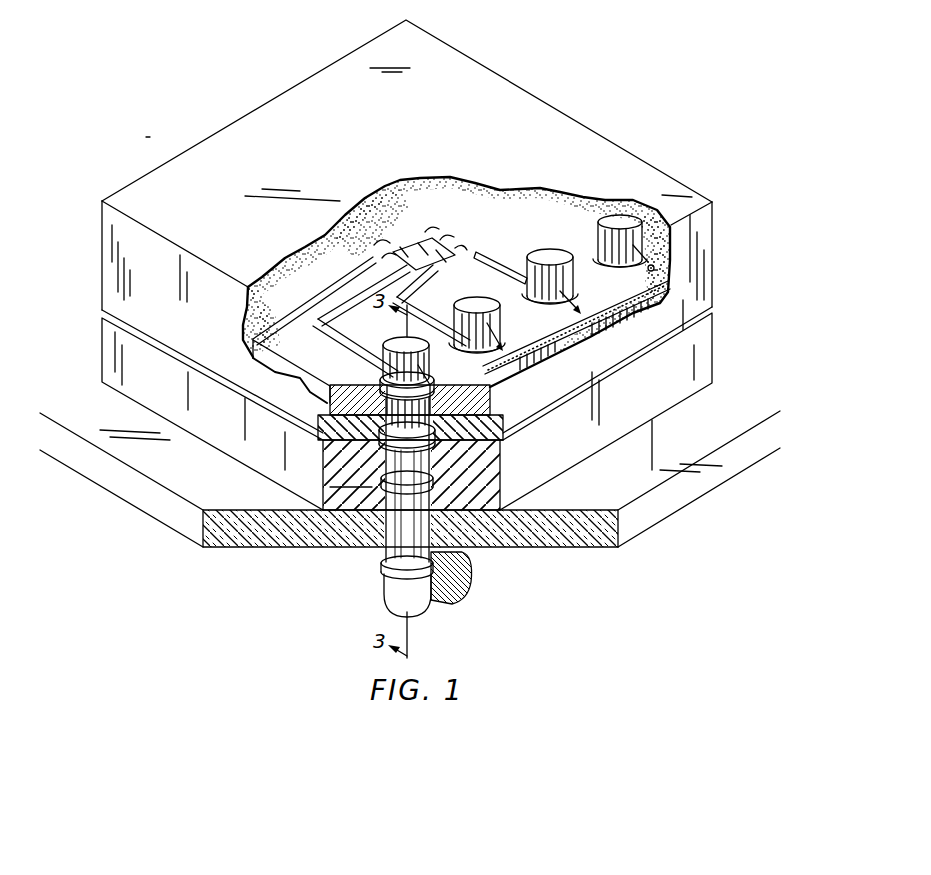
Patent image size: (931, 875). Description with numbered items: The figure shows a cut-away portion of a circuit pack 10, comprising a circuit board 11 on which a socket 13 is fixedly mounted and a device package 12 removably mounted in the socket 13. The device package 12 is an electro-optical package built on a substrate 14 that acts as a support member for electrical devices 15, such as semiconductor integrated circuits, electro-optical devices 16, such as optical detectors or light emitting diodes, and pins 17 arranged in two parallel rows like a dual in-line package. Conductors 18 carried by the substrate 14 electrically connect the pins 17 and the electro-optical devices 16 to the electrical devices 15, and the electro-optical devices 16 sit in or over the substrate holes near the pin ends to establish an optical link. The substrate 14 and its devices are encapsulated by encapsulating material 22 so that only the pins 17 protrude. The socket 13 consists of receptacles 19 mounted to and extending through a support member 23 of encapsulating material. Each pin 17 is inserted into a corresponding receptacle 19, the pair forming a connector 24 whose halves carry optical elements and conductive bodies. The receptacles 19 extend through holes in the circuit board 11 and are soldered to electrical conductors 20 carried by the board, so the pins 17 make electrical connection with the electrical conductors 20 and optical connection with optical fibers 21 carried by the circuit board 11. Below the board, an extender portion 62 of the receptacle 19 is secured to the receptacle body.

The circuit pack 10 is at (581, 60).
The circuit board 11 is at (733, 473).
The device package 12 is at (574, 131).
The socket 13 is at (668, 394).
The substrate 14 is at (348, 387).
The electrical devices 15 is at (402, 242).
The electro-optical devices 16 is at (543, 257).
The pins 17 is at (388, 404).
The conductors 18 is at (342, 276).
The receptacles 19 is at (386, 468).
The electrical conductors 20 is at (378, 551).
The optical fibers 21 is at (463, 549).
The encapsulating material 22 is at (289, 278).
The support member 23 is at (323, 470).
The connector 24 is at (442, 451).
The extender portion 62 is at (447, 597).